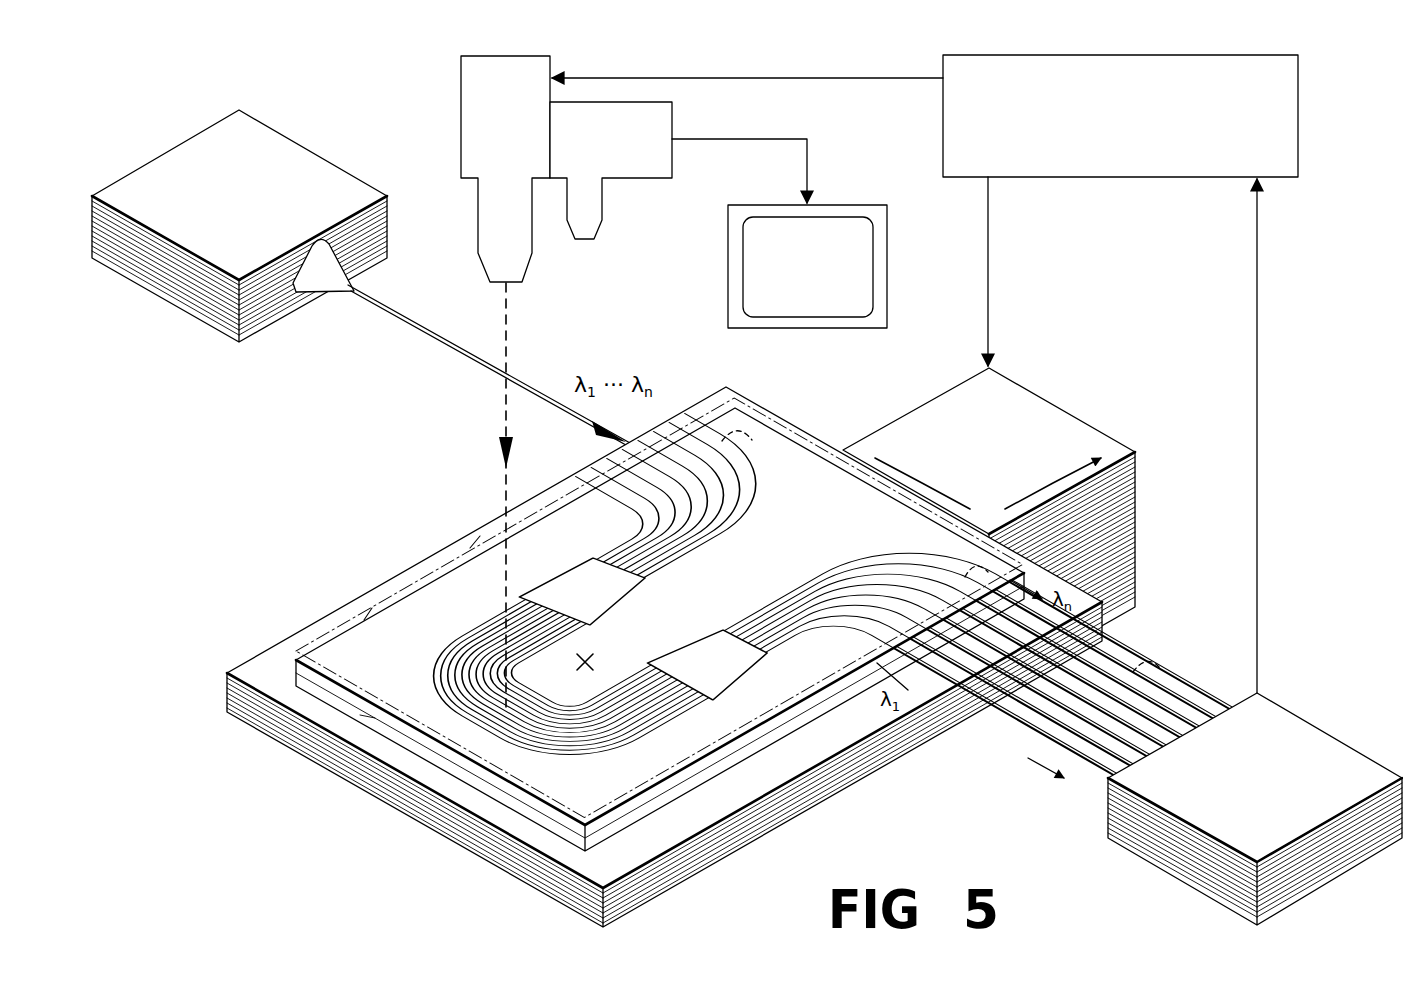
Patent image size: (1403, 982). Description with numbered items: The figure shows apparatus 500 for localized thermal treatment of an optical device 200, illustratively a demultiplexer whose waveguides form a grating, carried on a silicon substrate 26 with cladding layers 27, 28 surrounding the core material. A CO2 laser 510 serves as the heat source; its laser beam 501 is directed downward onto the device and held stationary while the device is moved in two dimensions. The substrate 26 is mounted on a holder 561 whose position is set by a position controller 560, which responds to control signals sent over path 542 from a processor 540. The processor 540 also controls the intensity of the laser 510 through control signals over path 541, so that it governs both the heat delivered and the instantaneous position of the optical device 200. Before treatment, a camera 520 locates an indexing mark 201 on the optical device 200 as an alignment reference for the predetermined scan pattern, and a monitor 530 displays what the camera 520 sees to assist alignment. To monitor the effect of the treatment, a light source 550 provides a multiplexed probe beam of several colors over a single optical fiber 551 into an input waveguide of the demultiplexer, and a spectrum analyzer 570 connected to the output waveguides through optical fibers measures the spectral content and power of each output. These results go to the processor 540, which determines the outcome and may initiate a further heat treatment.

The apparatus 500 is at (162, 95).
The light source 550 is at (221, 241).
The optical fiber 551 is at (458, 372).
The CO2 laser 510 is at (489, 167).
The camera 520 is at (595, 167).
The monitor 530 is at (792, 289).
The processor 540 is at (1104, 142).
The path 541 is at (837, 78).
The path 542 is at (983, 232).
The position controller 560 is at (972, 479).
The holder 561 is at (270, 661).
The optical device 200 is at (768, 671).
The indexing mark 201 is at (590, 654).
The silicon substrate 26 is at (367, 717).
The cladding layer 27 is at (368, 612).
The cladding layer 28 is at (478, 538).
The laser beam 501 is at (509, 307).
The spectrum analyzer 570 is at (1241, 822).